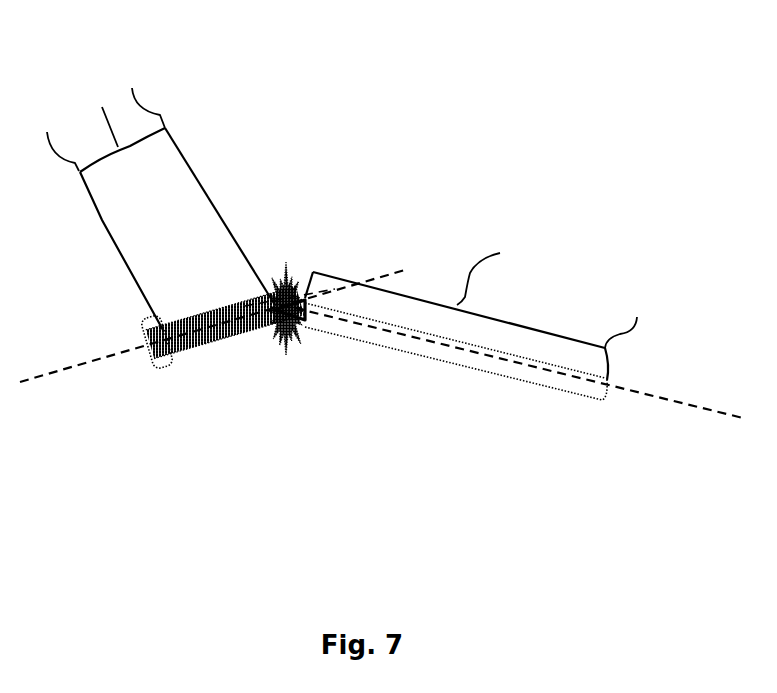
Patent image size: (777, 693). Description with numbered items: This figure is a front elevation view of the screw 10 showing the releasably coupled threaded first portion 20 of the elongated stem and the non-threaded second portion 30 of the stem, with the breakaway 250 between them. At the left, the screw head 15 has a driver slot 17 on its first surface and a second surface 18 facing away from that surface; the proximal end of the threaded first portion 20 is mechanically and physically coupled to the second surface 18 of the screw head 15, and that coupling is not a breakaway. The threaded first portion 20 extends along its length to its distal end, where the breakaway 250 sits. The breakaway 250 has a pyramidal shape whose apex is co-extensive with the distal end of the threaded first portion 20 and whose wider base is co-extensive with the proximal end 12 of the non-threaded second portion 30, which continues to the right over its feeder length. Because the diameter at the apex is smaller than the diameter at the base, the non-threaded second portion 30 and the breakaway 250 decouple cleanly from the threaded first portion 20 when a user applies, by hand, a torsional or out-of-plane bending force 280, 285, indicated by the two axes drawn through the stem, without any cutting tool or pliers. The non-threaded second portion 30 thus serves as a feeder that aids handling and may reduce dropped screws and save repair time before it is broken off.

The screw 10 is at (470, 98).
The proximal end of the non-threaded second portion 12 is at (314, 270).
The screw head 15 is at (137, 322).
The driver slot 17 is at (153, 343).
The second surface 18 is at (177, 348).
The threaded first portion 20 is at (202, 298).
The non-threaded second portion 30 is at (568, 260).
The breakaway 250 is at (307, 320).
The out-of-plane bending force 280 is at (37, 377).
The out-of-plane bending force 285 is at (647, 397).